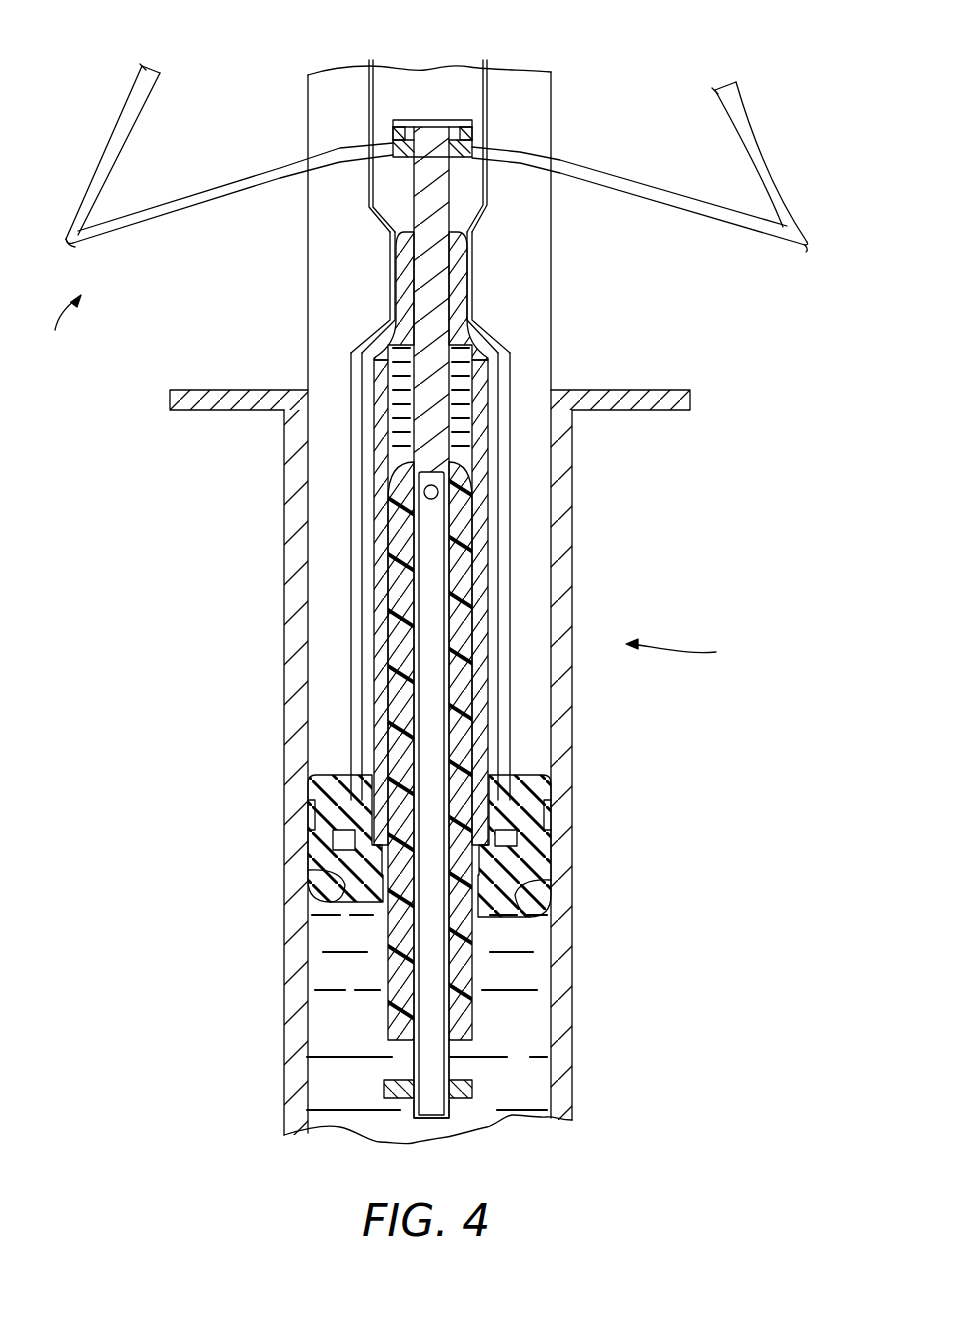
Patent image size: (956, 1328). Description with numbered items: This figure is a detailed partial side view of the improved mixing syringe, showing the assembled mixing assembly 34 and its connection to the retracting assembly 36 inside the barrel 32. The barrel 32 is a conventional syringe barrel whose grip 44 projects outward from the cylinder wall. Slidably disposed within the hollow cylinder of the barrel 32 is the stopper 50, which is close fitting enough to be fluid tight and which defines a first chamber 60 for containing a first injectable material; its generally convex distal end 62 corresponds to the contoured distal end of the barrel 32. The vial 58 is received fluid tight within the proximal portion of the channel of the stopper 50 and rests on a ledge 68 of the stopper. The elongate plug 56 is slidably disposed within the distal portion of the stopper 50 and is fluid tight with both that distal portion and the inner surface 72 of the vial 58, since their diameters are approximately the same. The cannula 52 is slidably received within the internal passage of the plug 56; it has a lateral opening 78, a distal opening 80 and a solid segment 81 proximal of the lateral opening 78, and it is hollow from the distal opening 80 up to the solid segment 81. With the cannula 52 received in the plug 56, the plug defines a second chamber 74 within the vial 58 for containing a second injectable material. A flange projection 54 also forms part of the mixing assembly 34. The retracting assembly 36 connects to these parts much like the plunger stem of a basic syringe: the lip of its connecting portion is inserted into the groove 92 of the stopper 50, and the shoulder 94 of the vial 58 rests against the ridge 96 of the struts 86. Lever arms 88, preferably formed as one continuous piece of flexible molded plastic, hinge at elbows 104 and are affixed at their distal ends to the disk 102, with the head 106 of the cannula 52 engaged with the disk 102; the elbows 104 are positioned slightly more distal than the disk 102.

The barrel 32 is at (293, 758).
The mixing assembly 34 is at (688, 651).
The retracting assembly 36 is at (60, 340).
The grip 44 is at (650, 390).
The stopper 50 is at (530, 800).
The cannula 52 is at (427, 1065).
The flange projection 54 is at (467, 1077).
The elongate plug 56 is at (460, 637).
The vial 58 is at (380, 597).
The first chamber 60 is at (350, 1000).
The convex distal end 62 is at (347, 900).
The ledge 68 is at (473, 915).
The inner surface of vial 72 is at (553, 970).
The second chamber 74 is at (390, 445).
The lateral opening 78 is at (438, 492).
The distal opening 80 is at (423, 1107).
The solid segment 81 is at (428, 277).
The struts 86 is at (330, 262).
The lever arms 88 is at (112, 135).
The groove 92 is at (333, 837).
The shoulder 94 is at (483, 340).
The ridge 96 is at (380, 333).
The disk 102 is at (393, 124).
The elbow 104 is at (73, 246).
The head 106 is at (460, 127).